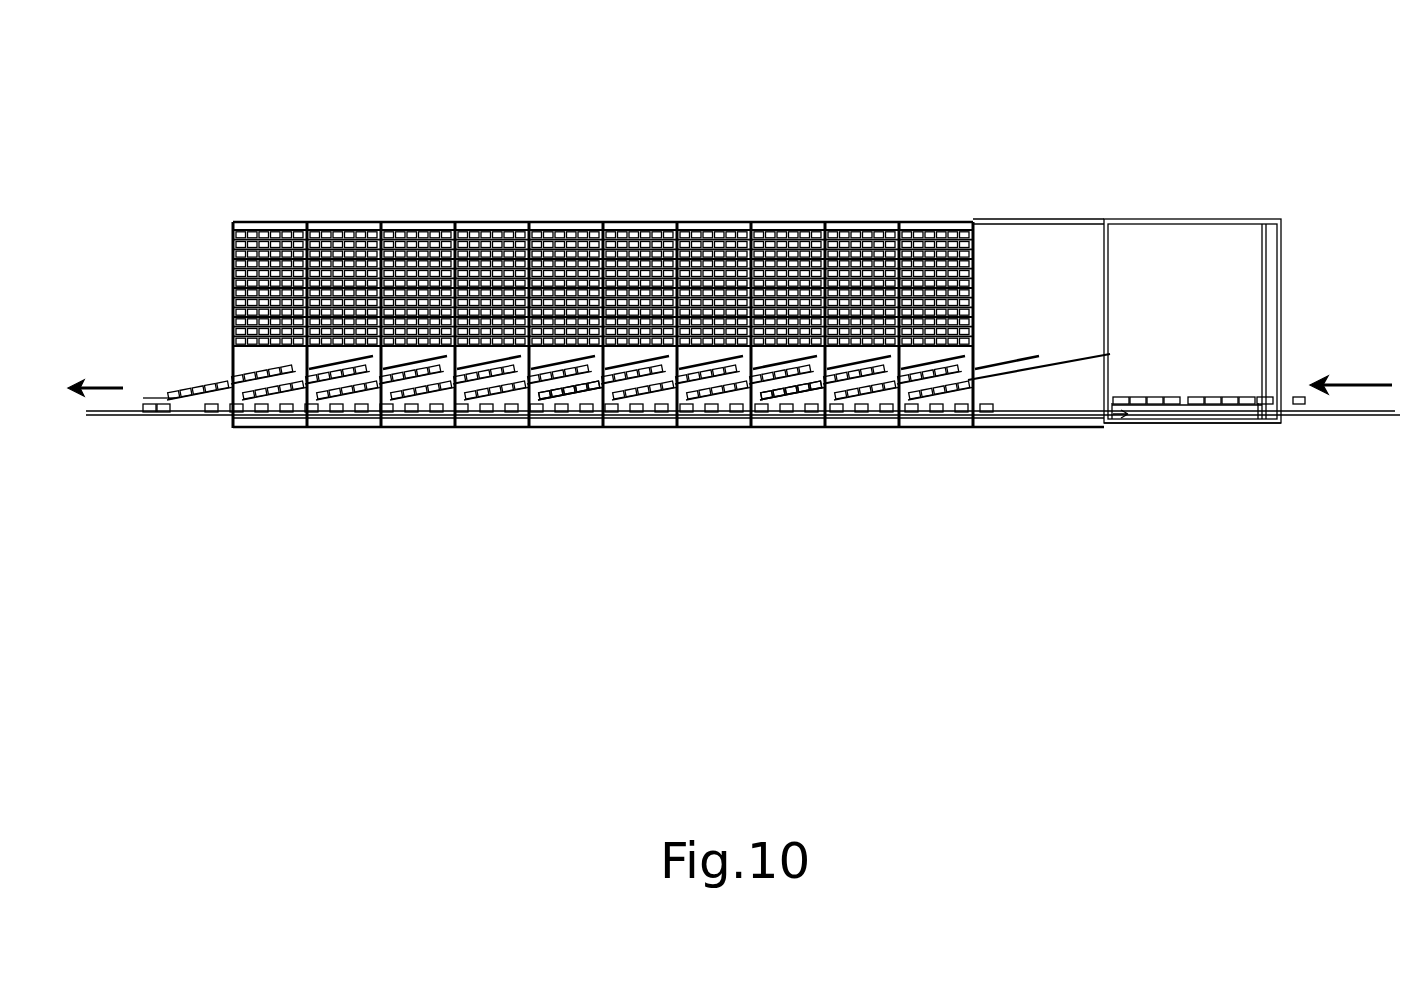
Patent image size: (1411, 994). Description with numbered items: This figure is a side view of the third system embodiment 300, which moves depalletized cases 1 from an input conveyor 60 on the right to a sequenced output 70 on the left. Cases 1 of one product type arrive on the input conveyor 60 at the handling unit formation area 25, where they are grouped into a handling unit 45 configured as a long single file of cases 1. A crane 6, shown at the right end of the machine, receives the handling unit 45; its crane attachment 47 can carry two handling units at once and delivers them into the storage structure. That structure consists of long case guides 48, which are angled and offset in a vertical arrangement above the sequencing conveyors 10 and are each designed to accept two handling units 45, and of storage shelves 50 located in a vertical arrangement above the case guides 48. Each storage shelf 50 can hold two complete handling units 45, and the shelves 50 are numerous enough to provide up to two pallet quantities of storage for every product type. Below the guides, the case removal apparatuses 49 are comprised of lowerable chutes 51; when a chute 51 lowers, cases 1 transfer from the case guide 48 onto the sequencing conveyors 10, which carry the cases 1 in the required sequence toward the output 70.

The case 1 is at (263, 237).
The storage shelf 50 is at (232, 260).
The case guide 48 is at (413, 398).
The lowerable chute 51 is at (600, 395).
The case removal apparatus 49 is at (762, 405).
The sequencing conveyor 10 is at (170, 435).
The crane 6 is at (1257, 280).
The handling unit 45 is at (1182, 370).
The crane attachment 47 is at (1107, 422).
The handling unit formation area 25 is at (1159, 452).
The output 70 is at (116, 360).
The input conveyor 60 is at (1361, 349).
The system embodiment 300 is at (224, 616).